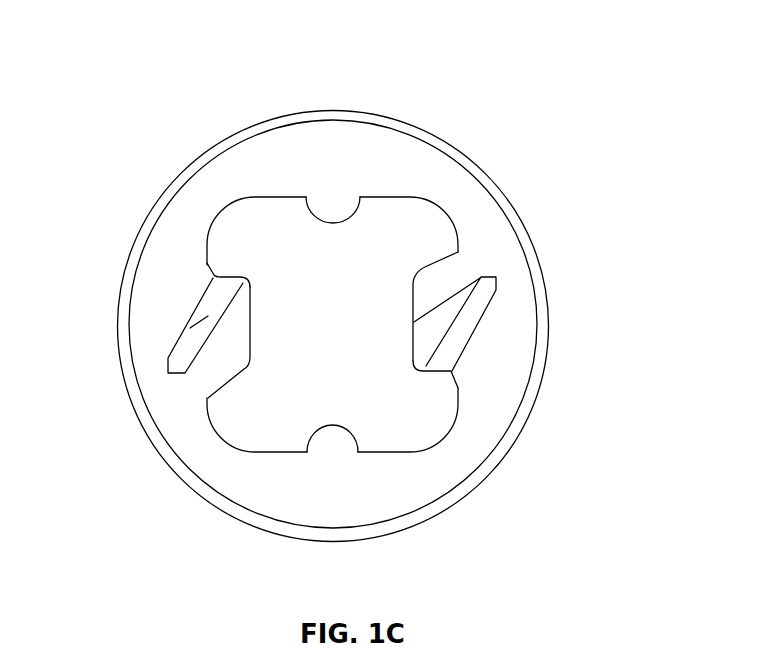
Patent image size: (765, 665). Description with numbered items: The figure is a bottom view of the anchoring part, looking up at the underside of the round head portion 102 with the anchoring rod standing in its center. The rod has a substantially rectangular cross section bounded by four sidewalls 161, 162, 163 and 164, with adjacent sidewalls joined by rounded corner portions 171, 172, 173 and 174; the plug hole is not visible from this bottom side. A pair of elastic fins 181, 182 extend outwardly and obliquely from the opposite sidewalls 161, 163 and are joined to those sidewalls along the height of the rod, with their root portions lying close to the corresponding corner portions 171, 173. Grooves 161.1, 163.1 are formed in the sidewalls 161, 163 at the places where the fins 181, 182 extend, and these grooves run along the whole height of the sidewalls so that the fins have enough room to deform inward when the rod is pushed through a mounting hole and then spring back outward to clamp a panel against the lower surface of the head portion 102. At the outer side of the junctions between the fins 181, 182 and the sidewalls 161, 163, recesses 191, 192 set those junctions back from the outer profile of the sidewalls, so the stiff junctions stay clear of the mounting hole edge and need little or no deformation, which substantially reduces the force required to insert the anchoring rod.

The head portion 102 is at (408, 170).
The sidewall 161 is at (433, 280).
The groove 161.1 is at (497, 282).
The sidewall 162 is at (372, 452).
The sidewall 163 is at (248, 353).
The groove 163.1 is at (250, 335).
The sidewall 164 is at (300, 197).
The corner portion 171 is at (430, 415).
The corner portion 172 is at (437, 220).
The corner portion 173 is at (228, 225).
The corner portion 174 is at (238, 422).
The elastic fin 181 is at (473, 328).
The elastic fin 182 is at (207, 317).
The recess 191 is at (455, 377).
The recess 192 is at (213, 276).